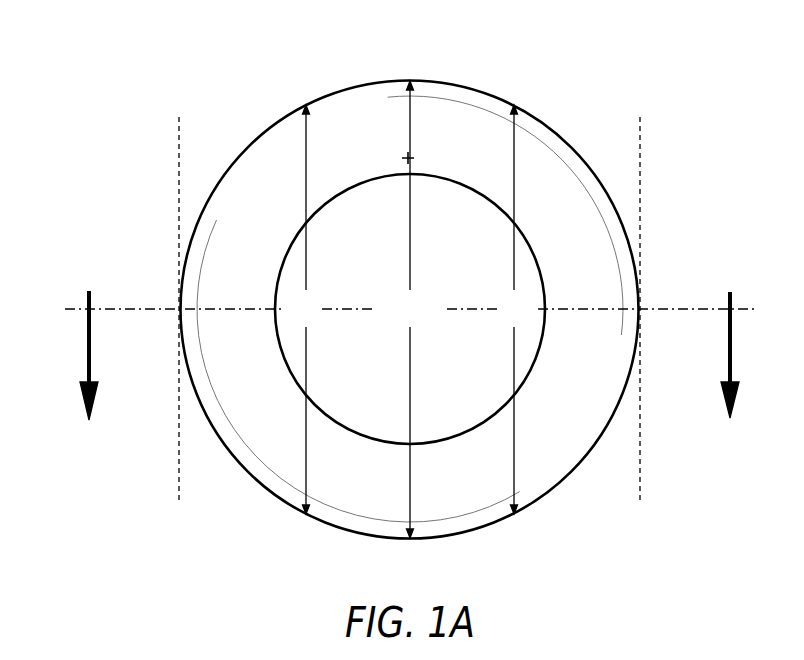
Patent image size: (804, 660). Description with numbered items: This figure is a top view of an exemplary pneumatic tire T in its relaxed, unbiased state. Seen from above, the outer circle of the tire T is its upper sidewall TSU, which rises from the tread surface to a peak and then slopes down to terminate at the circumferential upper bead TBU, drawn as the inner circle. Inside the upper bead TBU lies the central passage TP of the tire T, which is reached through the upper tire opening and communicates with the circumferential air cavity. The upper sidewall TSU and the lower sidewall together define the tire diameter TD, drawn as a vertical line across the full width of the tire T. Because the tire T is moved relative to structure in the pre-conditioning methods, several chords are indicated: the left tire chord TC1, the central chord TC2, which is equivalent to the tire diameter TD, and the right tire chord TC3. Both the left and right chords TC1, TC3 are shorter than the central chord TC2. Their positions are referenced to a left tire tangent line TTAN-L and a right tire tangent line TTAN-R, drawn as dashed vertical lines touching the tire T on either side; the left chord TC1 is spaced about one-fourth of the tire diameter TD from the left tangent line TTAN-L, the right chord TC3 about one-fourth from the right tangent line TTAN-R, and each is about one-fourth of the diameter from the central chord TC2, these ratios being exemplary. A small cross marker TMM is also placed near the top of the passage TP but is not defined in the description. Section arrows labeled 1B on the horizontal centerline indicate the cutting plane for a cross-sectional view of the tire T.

The tire T is at (200, 80).
The upper sidewall TSU is at (343, 118).
The circumferential upper bead TBU is at (530, 354).
The passage TP is at (449, 238).
The tire mid-mark point TMM is at (402, 138).
The left tire tangent line TTAN-L is at (178, 139).
The right tire tangent line TTAN-R is at (640, 150).
The left tire chord TC1 is at (306, 309).
The central chord TC2 is at (427, 309).
The right tire chord TC3 is at (521, 309).
The tire diameter TD is at (412, 309).
The section line 1B is at (413, 355).